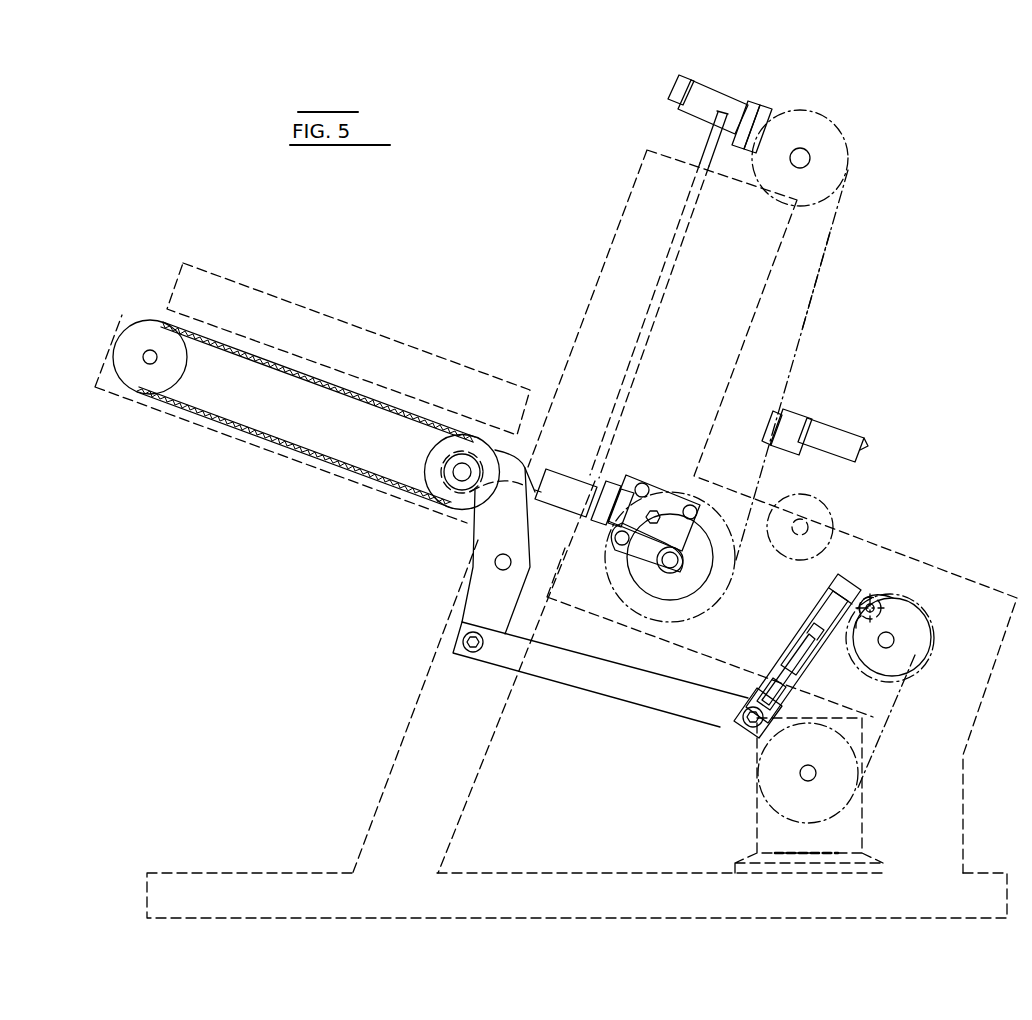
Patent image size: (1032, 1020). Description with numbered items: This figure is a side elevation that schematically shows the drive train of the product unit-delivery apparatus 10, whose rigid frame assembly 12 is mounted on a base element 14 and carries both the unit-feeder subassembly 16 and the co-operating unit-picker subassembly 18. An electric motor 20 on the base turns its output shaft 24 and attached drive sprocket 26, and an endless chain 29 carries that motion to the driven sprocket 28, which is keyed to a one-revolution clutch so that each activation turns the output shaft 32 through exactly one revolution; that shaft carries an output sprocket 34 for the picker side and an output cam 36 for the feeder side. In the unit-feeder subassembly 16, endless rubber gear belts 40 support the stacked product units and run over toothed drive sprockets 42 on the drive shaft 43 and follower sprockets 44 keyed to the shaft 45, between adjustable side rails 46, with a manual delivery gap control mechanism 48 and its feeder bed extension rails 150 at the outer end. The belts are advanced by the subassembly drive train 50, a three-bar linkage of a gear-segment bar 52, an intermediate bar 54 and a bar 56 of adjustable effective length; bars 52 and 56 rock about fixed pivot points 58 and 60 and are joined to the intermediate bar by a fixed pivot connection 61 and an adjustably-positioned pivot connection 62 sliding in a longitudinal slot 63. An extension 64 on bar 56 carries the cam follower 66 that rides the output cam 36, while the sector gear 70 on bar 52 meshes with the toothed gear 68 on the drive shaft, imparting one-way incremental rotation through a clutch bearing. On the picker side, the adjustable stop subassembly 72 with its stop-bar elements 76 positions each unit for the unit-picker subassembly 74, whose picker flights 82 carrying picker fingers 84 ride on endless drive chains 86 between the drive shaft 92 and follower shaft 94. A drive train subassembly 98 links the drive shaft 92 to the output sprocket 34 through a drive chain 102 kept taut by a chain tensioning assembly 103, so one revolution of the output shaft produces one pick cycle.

The product unit-delivery apparatus 10 is at (559, 214).
The structural frame assembly 12 is at (636, 170).
The base element 14 is at (626, 882).
The unit-feeder subassembly 16 is at (156, 311).
The unit-picker subassembly 18 is at (765, 107).
The electric motor 20 is at (860, 838).
The output shaft 24 is at (805, 777).
The drive sprocket 26 is at (855, 792).
The driven sprocket 28 is at (882, 598).
The endless chain 29 is at (890, 706).
The output shaft 32 is at (892, 645).
The output sprocket 34 is at (876, 598).
The output cam 36 is at (922, 606).
The endless rubber gear belts 40 is at (306, 458).
The toothed drive sprockets 42 is at (458, 480).
The drive shaft 43 is at (462, 480).
The follower sprockets 44 is at (148, 380).
The shaft 45 is at (158, 360).
The adjustable side rails 46 is at (315, 330).
The delivery gap control mechanism 48 is at (536, 465).
The subassembly drive train 50 is at (617, 708).
The gear-segment bar 52 is at (482, 604).
The intermediate bar 54 is at (648, 690).
The bar having adjustable effective length 56 is at (786, 655).
The fixed pivot point 58 is at (495, 564).
The fixed pivot point 60 is at (805, 640).
The fixed pivot connection 61 is at (474, 652).
The adjustably-positioned pivot connection 62 is at (748, 706).
The longitudinal slot 63 is at (778, 668).
The extension 64 is at (840, 596).
The cam follower 66 is at (870, 598).
The toothed gear 68 is at (442, 482).
The sector gear 70 is at (521, 492).
The adjustable stop subassembly 72 is at (700, 138).
The unit-picker subassembly 74 is at (826, 281).
The stop-bar elements 76 is at (652, 276).
The picker flights 82 is at (748, 100).
The picker fingers 84 is at (680, 83).
The endless drive chains 86 is at (820, 298).
The drive shaft 92 is at (688, 525).
The follower shaft 94 is at (802, 158).
The drive train subassembly 98 is at (612, 608).
The drive chain 102 is at (815, 545).
The chain tensioning assembly 103 is at (822, 512).
The feeder bed extension rails 150 is at (508, 455).